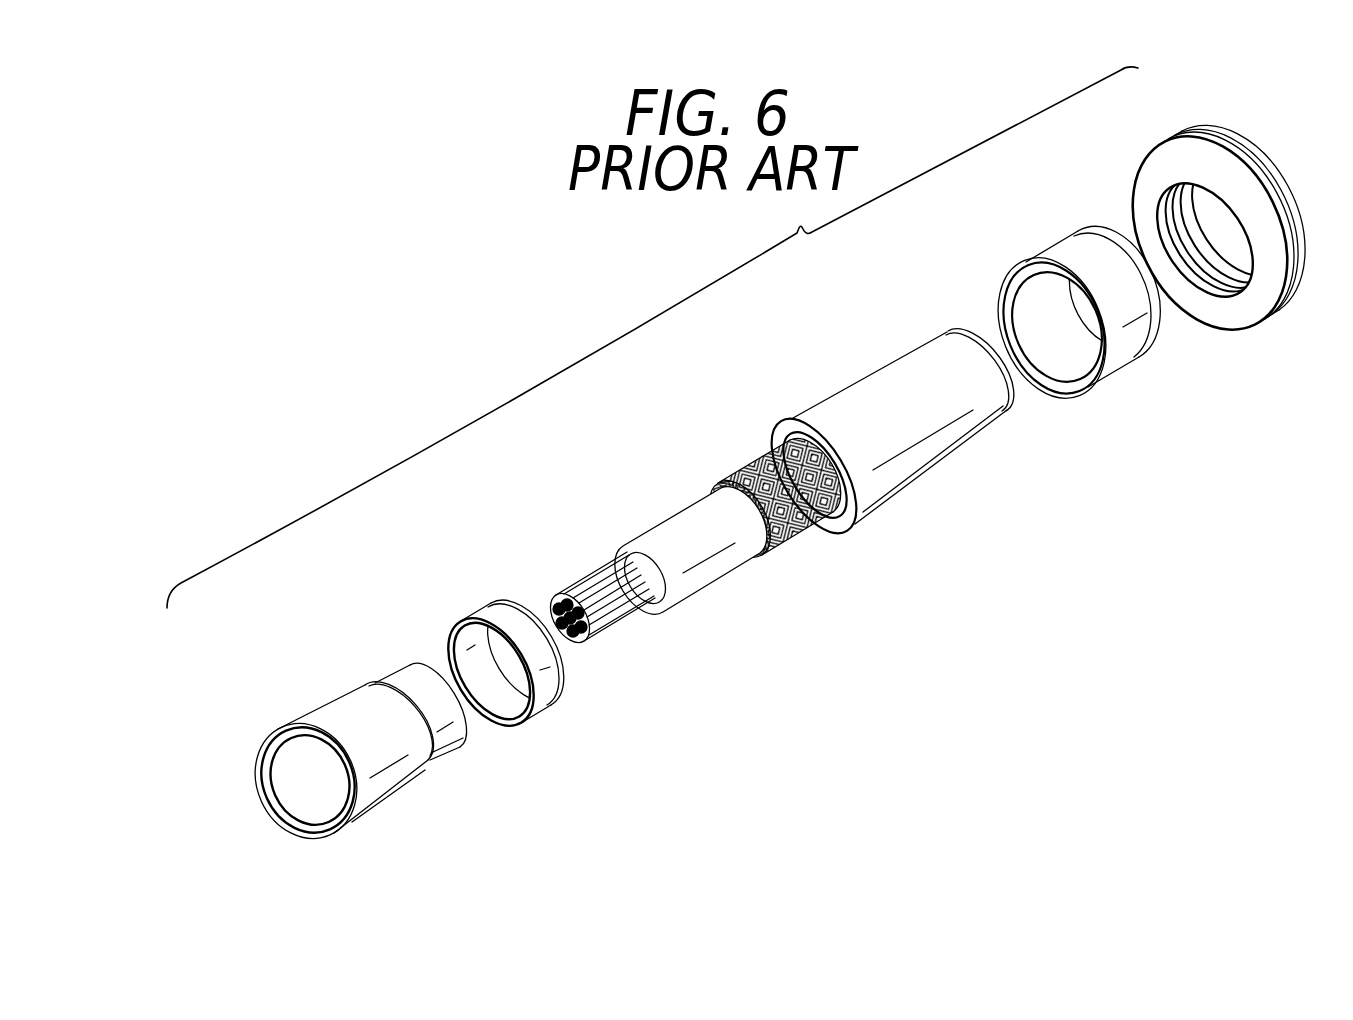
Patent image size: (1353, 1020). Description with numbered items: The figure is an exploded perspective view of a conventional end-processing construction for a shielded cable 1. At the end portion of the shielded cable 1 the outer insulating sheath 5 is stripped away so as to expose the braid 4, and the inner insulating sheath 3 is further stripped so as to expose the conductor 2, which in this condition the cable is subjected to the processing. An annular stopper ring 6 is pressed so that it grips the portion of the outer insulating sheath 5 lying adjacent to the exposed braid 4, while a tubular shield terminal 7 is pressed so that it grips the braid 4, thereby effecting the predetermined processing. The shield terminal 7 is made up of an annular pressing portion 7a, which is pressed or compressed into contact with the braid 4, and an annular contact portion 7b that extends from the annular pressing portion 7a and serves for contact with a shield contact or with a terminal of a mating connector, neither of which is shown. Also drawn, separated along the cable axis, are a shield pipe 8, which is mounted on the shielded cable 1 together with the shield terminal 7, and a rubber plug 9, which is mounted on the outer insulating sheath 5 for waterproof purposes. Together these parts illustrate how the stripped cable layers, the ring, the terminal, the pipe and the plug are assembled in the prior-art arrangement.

The shielded cable 1 is at (765, 395).
The conductor 2 is at (623, 618).
The inner insulating sheath 3 is at (720, 567).
The braid 4 is at (803, 523).
The outer insulating sheath 5 is at (925, 460).
The stopper ring 6 is at (1135, 355).
The shield terminal 7 is at (367, 820).
The annular pressing portion 7a is at (447, 737).
The annular contact portion 7b is at (402, 773).
The shield pipe 8 is at (545, 705).
The rubber plug 9 is at (1260, 307).